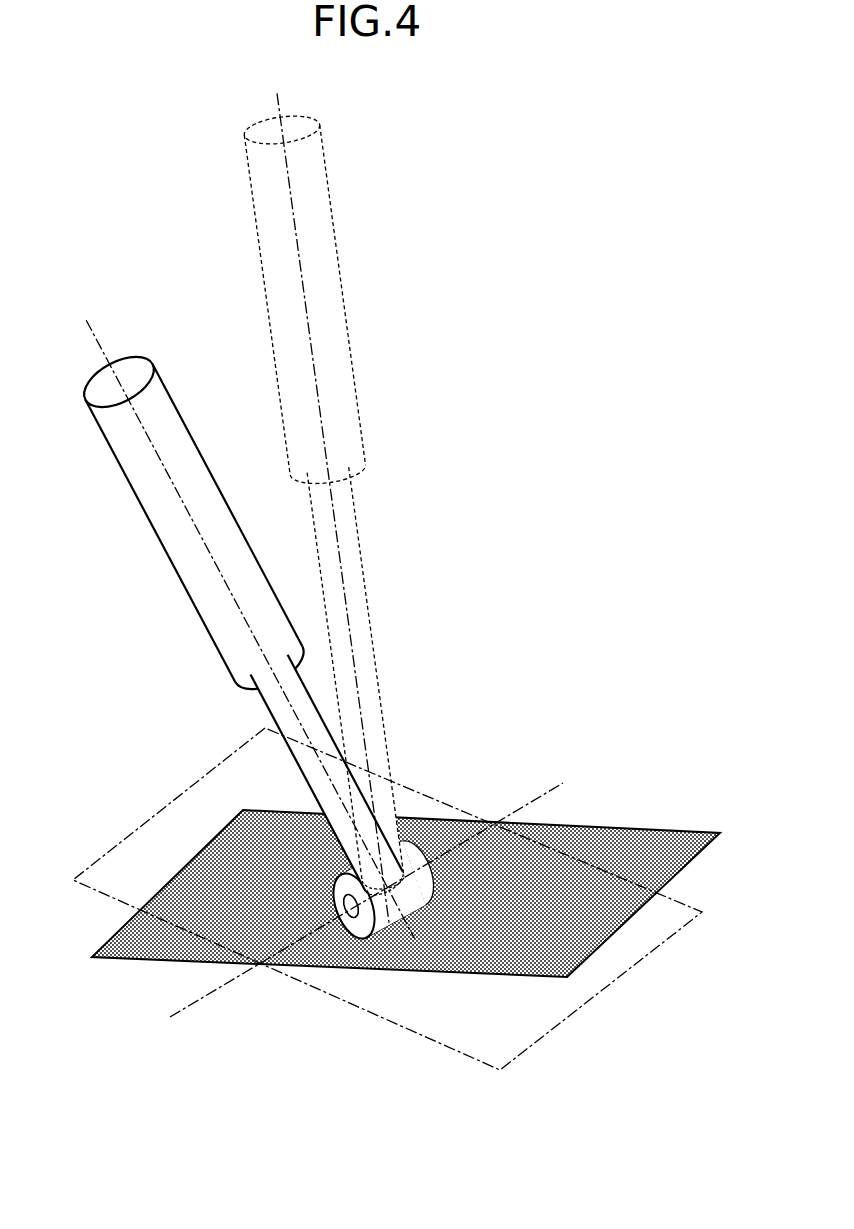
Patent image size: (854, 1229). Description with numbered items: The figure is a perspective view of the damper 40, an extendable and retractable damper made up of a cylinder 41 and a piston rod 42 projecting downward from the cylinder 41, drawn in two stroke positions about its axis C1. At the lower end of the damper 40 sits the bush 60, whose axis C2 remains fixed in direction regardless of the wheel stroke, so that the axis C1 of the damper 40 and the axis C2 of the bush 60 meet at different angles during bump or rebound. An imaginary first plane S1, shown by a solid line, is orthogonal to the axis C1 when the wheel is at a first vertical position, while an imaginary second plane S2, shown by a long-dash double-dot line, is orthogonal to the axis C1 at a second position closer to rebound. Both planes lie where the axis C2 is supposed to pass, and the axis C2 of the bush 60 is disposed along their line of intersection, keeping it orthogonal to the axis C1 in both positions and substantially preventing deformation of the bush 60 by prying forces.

The damper 40 is at (297, 503).
The cylinder 41 is at (217, 648).
The piston rod 42 is at (272, 705).
The bush 60 is at (415, 847).
The axis of the damper C1 is at (300, 267).
The axis of the bush C2 is at (557, 782).
The first plane S1 is at (650, 832).
The second plane S2 is at (440, 1043).